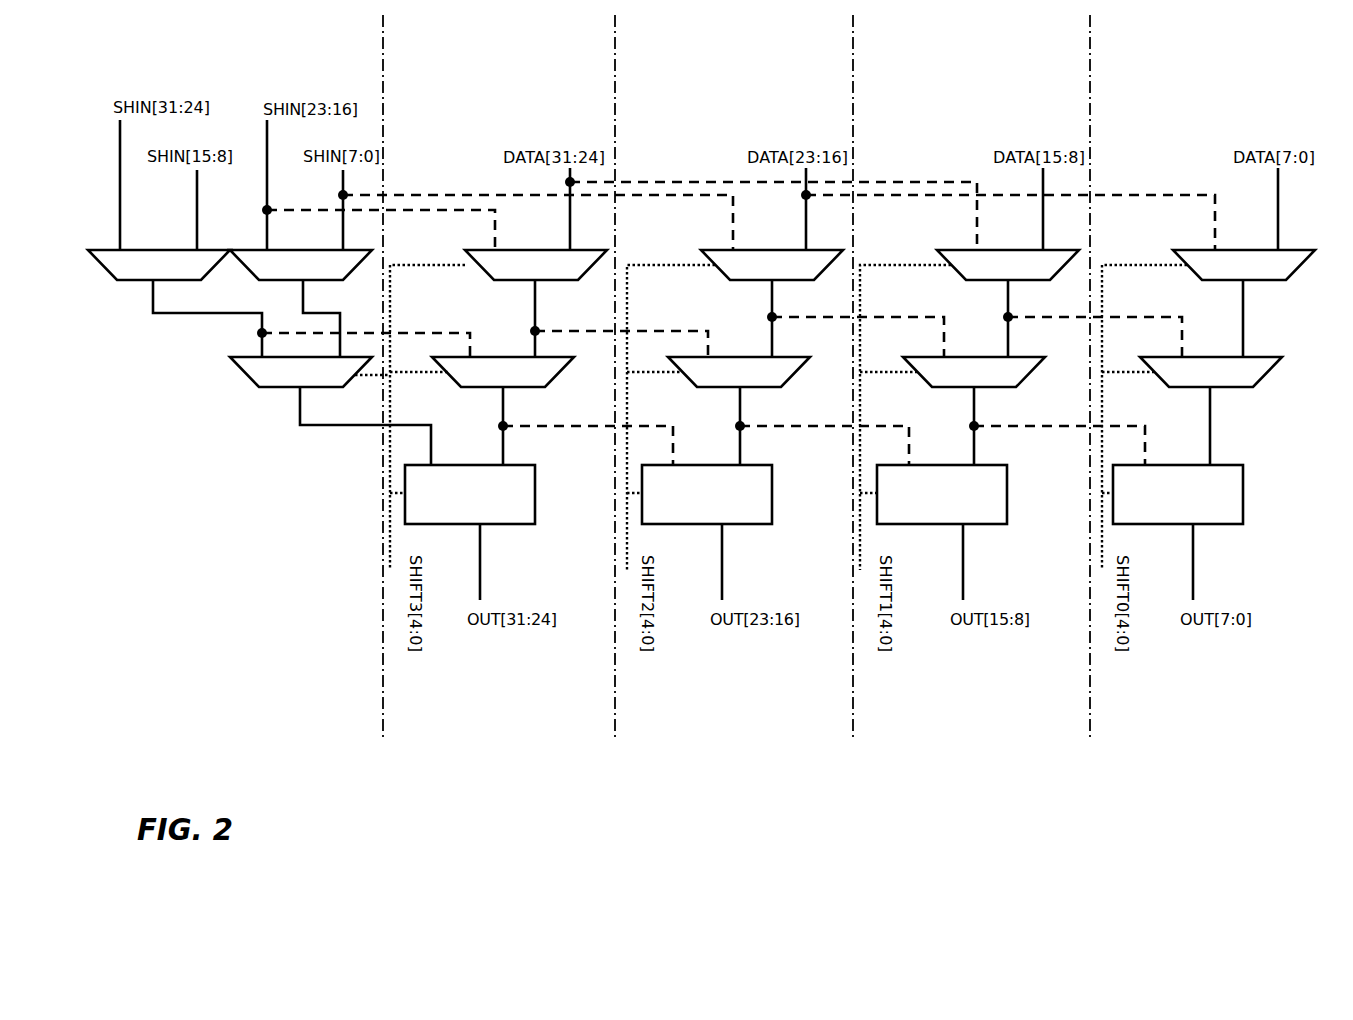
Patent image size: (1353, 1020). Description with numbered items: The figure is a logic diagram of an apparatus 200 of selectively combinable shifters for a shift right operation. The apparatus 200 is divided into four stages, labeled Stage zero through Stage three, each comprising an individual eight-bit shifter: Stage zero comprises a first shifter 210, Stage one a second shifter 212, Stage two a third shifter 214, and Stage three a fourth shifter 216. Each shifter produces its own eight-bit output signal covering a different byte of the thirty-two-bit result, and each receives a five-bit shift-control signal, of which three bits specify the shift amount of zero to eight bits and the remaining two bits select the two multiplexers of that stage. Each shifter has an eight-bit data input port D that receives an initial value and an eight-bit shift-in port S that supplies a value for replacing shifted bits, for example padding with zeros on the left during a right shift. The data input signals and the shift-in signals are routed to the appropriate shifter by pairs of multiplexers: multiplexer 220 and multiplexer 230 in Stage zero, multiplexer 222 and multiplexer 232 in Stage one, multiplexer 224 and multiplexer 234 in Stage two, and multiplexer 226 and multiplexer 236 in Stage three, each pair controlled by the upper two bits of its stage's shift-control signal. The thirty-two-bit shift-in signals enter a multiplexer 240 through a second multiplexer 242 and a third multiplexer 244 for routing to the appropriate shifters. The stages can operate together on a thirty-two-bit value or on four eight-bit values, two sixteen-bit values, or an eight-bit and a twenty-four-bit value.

The apparatus 200 is at (1184, 749).
The third multiplexer 244 is at (174, 276).
The second multiplexer 242 is at (316, 276).
The multiplexer 240 is at (316, 383).
The multiplexer 236 is at (551, 276).
The multiplexer 234 is at (787, 276).
The multiplexer 232 is at (1023, 276).
The multiplexer 230 is at (1259, 276).
The multiplexer 226 is at (518, 383).
The multiplexer 224 is at (754, 383).
The multiplexer 222 is at (989, 383).
The multiplexer 220 is at (1226, 383).
The fourth shifter 216 is at (484, 516).
The third shifter 214 is at (721, 516).
The second shifter 212 is at (956, 516).
The first shifter 210 is at (1192, 516).